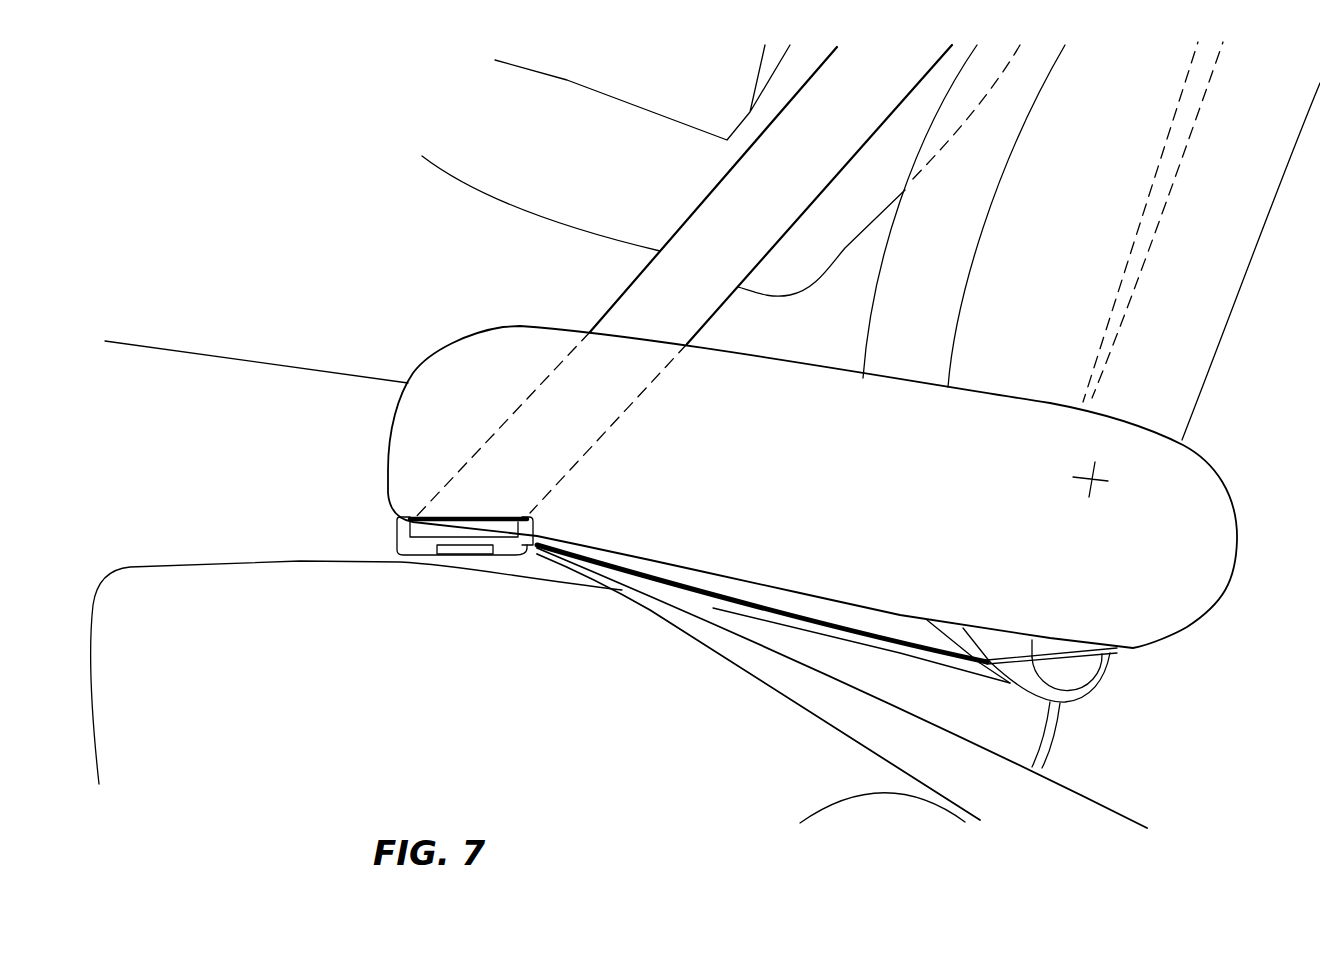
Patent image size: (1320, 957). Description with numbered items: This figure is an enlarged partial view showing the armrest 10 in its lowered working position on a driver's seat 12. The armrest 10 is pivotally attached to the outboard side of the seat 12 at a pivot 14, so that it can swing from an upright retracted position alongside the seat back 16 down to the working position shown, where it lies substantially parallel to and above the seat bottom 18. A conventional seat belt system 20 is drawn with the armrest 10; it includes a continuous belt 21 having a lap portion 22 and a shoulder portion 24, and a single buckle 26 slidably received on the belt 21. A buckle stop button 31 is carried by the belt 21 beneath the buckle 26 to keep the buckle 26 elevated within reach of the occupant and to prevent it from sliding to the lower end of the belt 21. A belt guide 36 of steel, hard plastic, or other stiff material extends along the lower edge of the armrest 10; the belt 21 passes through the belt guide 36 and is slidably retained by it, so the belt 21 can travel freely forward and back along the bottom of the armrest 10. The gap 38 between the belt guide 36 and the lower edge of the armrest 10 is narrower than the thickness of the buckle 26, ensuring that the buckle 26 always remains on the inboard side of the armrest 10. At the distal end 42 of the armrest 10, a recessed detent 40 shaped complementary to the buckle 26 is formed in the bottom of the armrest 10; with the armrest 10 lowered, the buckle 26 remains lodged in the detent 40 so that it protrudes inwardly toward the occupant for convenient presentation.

The armrest 10 is at (818, 442).
The driver's seat 12 is at (1042, 736).
The pivot 14 is at (1098, 485).
The seat back 16 is at (1080, 208).
The seat bottom 18 is at (388, 675).
The seat belt system 20 is at (596, 277).
The belt 21 is at (676, 233).
The lap portion 22 is at (735, 657).
The shoulder portion 24 is at (712, 190).
The buckle 26 is at (398, 550).
The buckle stop button 31 is at (448, 557).
The belt guide 36 is at (878, 632).
The gap 38 is at (792, 603).
The recessed detent 40 is at (540, 523).
The distal end 42 is at (475, 387).